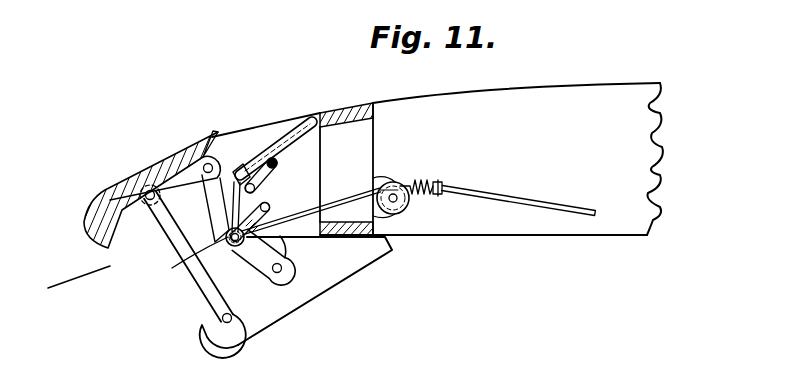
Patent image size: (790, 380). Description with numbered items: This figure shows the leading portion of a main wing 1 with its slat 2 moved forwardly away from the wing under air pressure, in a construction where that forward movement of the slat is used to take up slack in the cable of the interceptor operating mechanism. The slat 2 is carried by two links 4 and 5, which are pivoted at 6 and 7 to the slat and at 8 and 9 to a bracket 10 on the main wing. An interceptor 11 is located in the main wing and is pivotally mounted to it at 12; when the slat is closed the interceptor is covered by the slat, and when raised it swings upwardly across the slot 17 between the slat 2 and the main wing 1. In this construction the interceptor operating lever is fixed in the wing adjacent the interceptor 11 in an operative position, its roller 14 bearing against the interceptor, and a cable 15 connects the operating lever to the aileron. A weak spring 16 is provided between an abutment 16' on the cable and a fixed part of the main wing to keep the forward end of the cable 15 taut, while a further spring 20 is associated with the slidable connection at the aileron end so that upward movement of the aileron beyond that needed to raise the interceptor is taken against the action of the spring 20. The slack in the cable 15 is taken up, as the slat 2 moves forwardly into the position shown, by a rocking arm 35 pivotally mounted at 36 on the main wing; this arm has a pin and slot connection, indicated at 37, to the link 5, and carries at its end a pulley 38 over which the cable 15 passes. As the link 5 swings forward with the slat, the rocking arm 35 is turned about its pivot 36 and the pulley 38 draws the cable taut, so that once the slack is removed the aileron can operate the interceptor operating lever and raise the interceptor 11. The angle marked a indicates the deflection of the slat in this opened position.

The main wing 1 is at (498, 93).
The slat 2 is at (103, 200).
The link 4 is at (205, 290).
The link 5 is at (212, 198).
The pivot 6 is at (146, 190).
The pivot 7 is at (203, 168).
The pivot 8 is at (224, 321).
The pivot 9 is at (276, 274).
The bracket 10 is at (312, 295).
The interceptor 11 is at (282, 145).
The pivot 12 is at (238, 170).
The roller 14 is at (278, 166).
The cable 15 is at (333, 206).
The spring 16 is at (403, 189).
The abutment 16' is at (455, 178).
The slot 17 is at (214, 147).
The spring 20 is at (79, 284).
The angle a is at (51, 271).
The rocking arm 35 is at (282, 237).
The pivot 36 is at (270, 203).
The pin and slot connection 37 is at (256, 246).
The pulley 38 is at (187, 259).